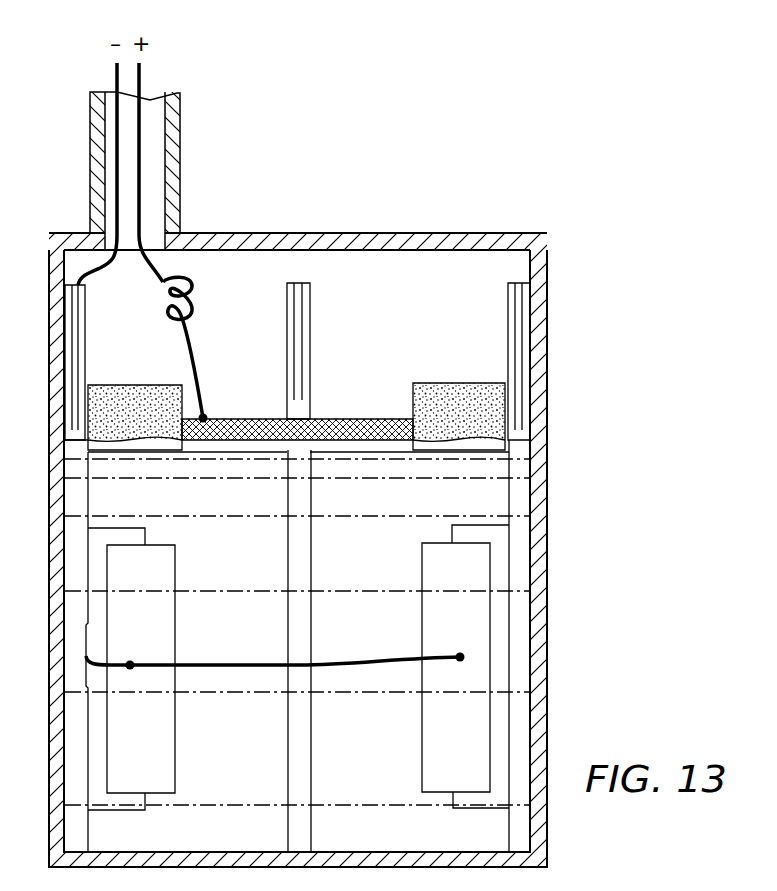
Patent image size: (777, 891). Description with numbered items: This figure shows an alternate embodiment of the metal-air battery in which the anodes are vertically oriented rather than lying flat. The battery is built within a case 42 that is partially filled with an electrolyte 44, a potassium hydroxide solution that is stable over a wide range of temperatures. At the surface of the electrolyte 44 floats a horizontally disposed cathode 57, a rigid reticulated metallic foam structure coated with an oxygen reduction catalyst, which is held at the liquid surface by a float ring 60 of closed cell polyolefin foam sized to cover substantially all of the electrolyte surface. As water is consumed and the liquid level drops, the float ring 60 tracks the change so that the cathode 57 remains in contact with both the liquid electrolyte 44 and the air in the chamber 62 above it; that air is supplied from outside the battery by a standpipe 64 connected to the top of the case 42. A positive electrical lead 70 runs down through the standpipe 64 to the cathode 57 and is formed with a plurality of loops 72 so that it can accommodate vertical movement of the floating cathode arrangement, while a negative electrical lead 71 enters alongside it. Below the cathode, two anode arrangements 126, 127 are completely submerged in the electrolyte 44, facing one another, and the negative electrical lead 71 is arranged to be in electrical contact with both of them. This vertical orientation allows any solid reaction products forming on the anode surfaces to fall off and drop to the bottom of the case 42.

The case 42 is at (52, 612).
The electrolyte 44 is at (85, 497).
The cathode 57 is at (254, 419).
The float ring 60 is at (460, 392).
The chamber 62 is at (246, 262).
The standpipe 64 is at (90, 177).
The positive electrical lead 70 is at (140, 77).
The negative electrical lead 71 is at (117, 78).
The loops 72 is at (193, 306).
The anode arrangement 126 is at (160, 765).
The anode arrangement 127 is at (435, 767).